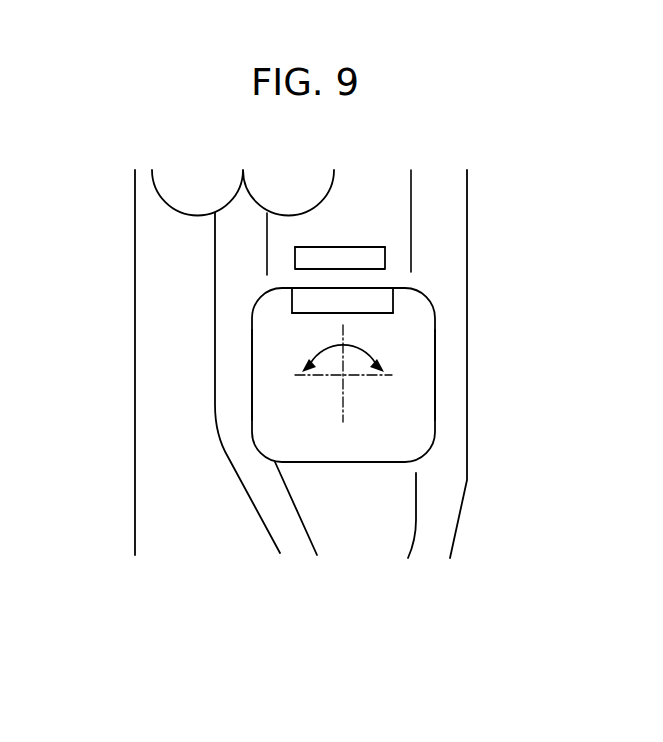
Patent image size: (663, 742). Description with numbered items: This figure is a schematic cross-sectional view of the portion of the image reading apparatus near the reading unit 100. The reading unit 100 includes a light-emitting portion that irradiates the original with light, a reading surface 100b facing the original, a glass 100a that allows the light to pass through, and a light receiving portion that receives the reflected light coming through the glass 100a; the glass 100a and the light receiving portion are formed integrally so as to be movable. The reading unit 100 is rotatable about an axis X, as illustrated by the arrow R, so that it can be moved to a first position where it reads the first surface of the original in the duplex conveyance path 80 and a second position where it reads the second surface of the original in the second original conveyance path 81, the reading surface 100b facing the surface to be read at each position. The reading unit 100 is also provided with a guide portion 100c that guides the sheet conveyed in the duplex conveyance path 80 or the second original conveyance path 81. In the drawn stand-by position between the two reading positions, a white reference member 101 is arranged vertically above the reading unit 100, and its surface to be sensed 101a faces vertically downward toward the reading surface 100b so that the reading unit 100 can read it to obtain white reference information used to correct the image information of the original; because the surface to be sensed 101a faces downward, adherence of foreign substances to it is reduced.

The duplex conveyance path 80 is at (447, 510).
The second original conveyance path 81 is at (273, 523).
The reading unit 100 is at (277, 428).
The glass 100a is at (315, 317).
The reading surface 100b is at (297, 300).
The guide portion 100c is at (248, 382).
The white reference member 101 is at (317, 257).
The surface to be sensed 101a is at (362, 268).
The arrow R is at (360, 345).
The axis X is at (343, 375).